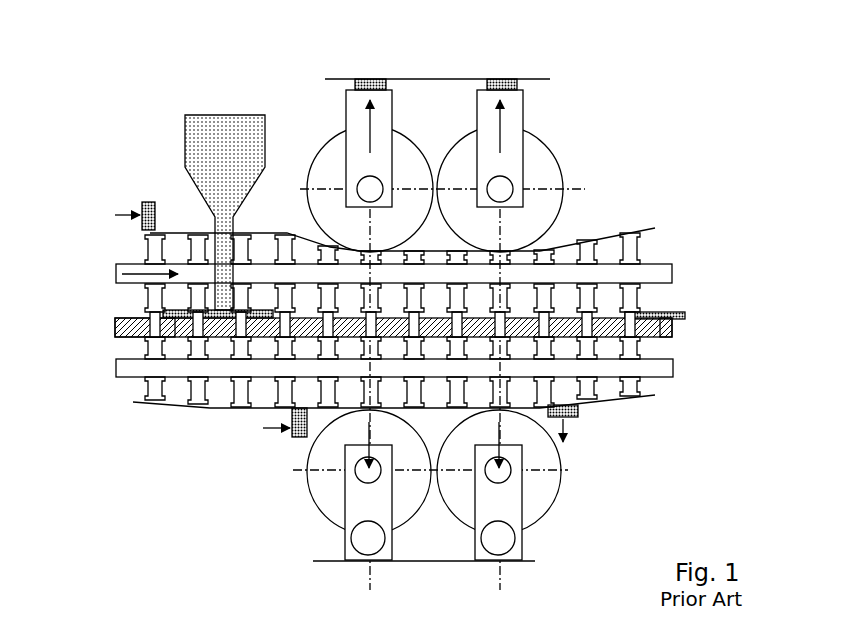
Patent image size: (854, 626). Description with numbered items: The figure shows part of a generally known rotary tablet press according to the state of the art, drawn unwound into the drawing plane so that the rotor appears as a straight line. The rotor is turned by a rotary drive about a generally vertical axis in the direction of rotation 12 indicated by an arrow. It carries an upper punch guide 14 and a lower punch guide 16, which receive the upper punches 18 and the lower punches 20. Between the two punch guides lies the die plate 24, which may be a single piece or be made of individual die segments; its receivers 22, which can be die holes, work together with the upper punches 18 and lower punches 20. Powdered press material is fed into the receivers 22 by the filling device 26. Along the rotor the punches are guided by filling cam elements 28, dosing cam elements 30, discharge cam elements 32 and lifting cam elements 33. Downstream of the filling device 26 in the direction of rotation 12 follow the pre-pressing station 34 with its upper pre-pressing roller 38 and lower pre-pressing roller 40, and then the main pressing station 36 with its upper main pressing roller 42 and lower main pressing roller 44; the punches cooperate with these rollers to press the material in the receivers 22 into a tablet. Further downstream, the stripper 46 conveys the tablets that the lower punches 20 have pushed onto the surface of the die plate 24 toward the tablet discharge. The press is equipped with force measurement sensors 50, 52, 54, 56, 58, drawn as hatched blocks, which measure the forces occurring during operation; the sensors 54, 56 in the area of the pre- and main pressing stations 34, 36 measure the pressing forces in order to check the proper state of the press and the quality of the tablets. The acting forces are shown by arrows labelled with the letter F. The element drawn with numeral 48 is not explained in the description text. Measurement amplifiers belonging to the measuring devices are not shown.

The direction of rotation 12 is at (112, 283).
The upper punch guide 14 is at (662, 275).
The lower punch guide 16 is at (662, 367).
The upper punch 18 is at (153, 252).
The lower punch 20 is at (147, 381).
The receiver 22 is at (130, 338).
The die plate 24 is at (115, 332).
The filling device 26 is at (163, 312).
The filling cam element 28 is at (175, 408).
The dosing cam element 30 is at (253, 412).
The discharge cam element 32 is at (598, 403).
The lifting cam element 33 is at (612, 232).
The pre-pressing station 34 is at (305, 525).
The main pressing station 36 is at (553, 530).
The upper pre-pressing roller 38 is at (333, 157).
The lower pre-pressing roller 40 is at (322, 478).
The upper main pressing roller 42 is at (540, 155).
The lower main pressing roller 44 is at (547, 488).
The stripper 46 is at (650, 308).
The end stop 48 is at (680, 323).
The force measurement sensor 50 is at (147, 202).
The force measurement sensor 52 is at (292, 435).
The force measurement sensor 54 is at (375, 83).
The force measurement sensor 56 is at (507, 83).
The force measurement sensor 58 is at (578, 413).